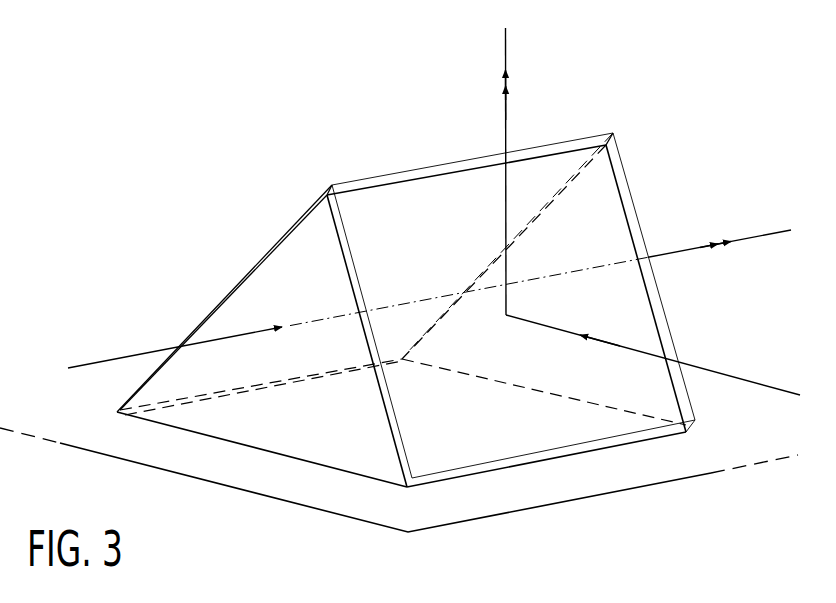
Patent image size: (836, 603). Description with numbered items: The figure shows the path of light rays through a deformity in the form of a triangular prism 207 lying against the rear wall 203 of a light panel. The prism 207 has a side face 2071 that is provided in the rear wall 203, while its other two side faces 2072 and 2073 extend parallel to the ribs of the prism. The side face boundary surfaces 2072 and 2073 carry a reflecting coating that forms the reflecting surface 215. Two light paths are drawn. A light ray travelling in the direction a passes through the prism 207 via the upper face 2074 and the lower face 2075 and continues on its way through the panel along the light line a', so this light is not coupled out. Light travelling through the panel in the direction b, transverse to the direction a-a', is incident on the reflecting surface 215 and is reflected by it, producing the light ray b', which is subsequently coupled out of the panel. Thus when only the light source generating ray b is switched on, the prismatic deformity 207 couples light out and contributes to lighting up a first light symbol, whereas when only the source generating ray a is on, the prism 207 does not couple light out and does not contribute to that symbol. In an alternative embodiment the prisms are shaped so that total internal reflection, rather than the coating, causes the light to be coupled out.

The triangular prism deformity 207 is at (406, 334).
The reflecting surface 215 is at (370, 183).
The side face 2071 is at (320, 430).
The side face 2072 is at (445, 195).
The side face 2073 is at (471, 435).
The upper face 2074 is at (293, 263).
The lower face 2075 is at (598, 193).
The rear wall 203 is at (350, 502).
The light ray direction a is at (358, 312).
The light line a' is at (719, 221).
The light ray direction b is at (653, 355).
The reflected light ray b' is at (487, 171).